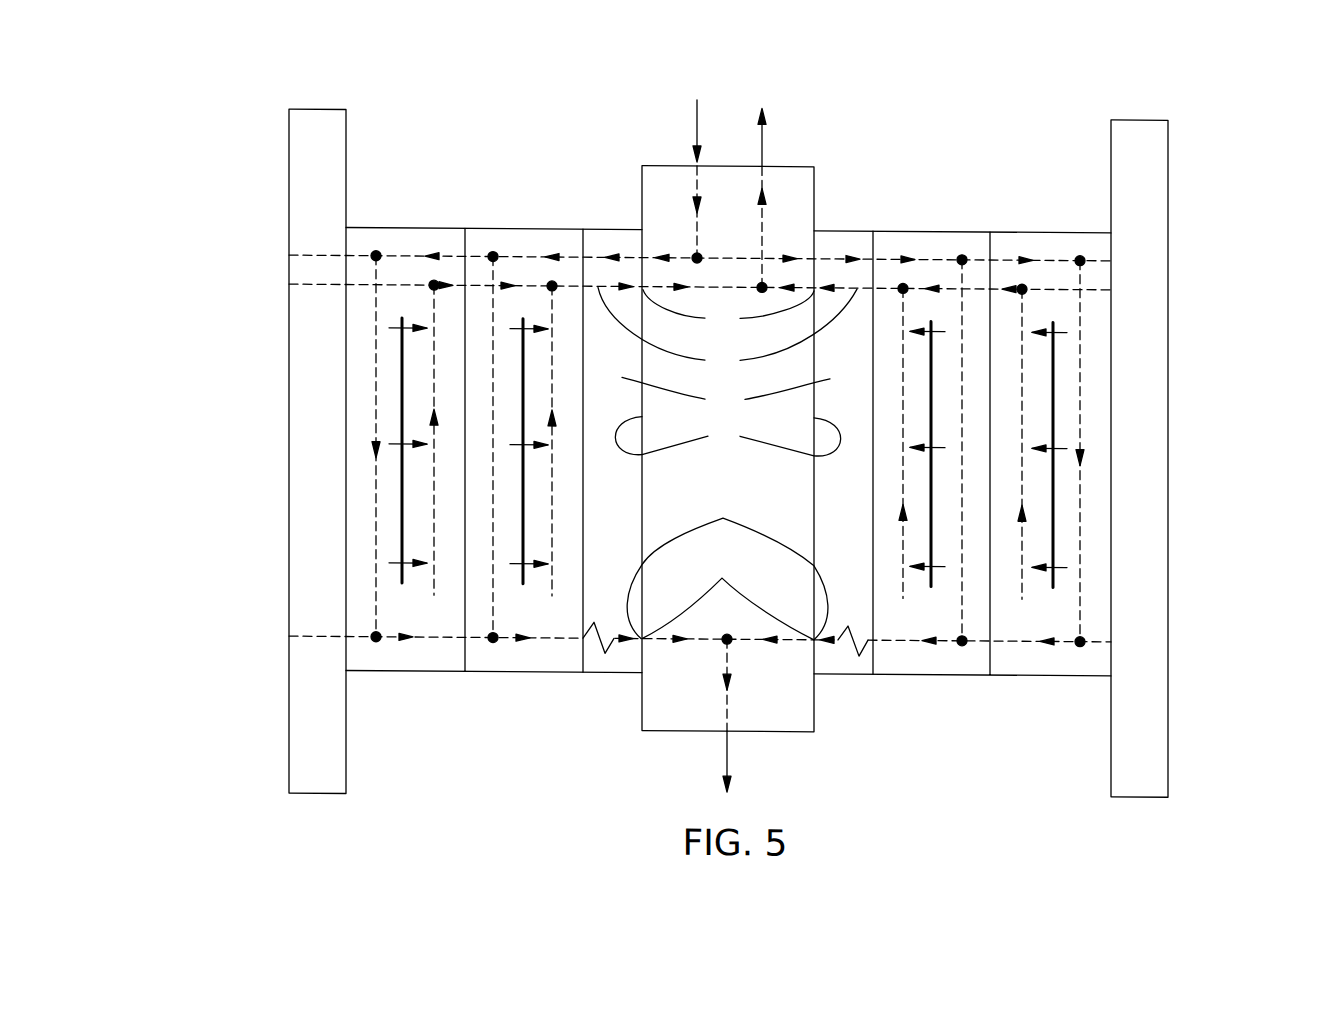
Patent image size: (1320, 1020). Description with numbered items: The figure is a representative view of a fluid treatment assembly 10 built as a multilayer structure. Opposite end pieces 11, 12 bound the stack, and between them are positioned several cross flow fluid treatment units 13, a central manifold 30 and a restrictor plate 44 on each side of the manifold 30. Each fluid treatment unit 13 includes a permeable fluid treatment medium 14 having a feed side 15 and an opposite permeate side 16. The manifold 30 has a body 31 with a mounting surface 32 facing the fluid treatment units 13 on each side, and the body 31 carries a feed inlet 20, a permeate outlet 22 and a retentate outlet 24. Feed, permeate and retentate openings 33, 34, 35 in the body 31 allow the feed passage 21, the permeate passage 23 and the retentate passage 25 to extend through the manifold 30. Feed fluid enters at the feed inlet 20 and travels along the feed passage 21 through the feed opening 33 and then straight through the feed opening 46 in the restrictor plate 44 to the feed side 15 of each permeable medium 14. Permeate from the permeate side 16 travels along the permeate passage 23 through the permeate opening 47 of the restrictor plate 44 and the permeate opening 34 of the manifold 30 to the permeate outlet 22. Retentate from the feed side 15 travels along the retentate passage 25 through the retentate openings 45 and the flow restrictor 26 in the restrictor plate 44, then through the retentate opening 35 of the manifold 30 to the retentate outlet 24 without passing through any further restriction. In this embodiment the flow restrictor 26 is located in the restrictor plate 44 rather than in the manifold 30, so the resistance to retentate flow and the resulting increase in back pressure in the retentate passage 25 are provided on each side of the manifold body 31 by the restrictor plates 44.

The fluid treatment assembly 10 is at (1086, 112).
The end piece 11 is at (313, 164).
The end piece 12 is at (1138, 159).
The cross flow fluid treatment unit 13 is at (523, 660).
The permeable fluid treatment medium 14 is at (402, 404).
The feed side 15 is at (402, 367).
The permeate side 16 is at (402, 522).
The feed inlet 20 is at (697, 124).
The feed passage 21 is at (397, 258).
The permeate outlet 22 is at (762, 145).
The permeate passage 23 is at (510, 287).
The retentate outlet 24 is at (727, 740).
The retentate passage 25 is at (493, 605).
The flow restrictor 26 is at (614, 640).
The manifold 30 is at (810, 208).
The body 31 is at (655, 195).
The mounting surface 32 is at (727, 435).
The feed opening 33 is at (642, 256).
The permeate opening 34 is at (728, 309).
The retentate opening 35 is at (728, 595).
The restrictor plate 44 is at (726, 385).
The retentate opening 45 is at (1022, 532).
The feed opening 46 is at (589, 258).
The permeate opening 47 is at (727, 326).